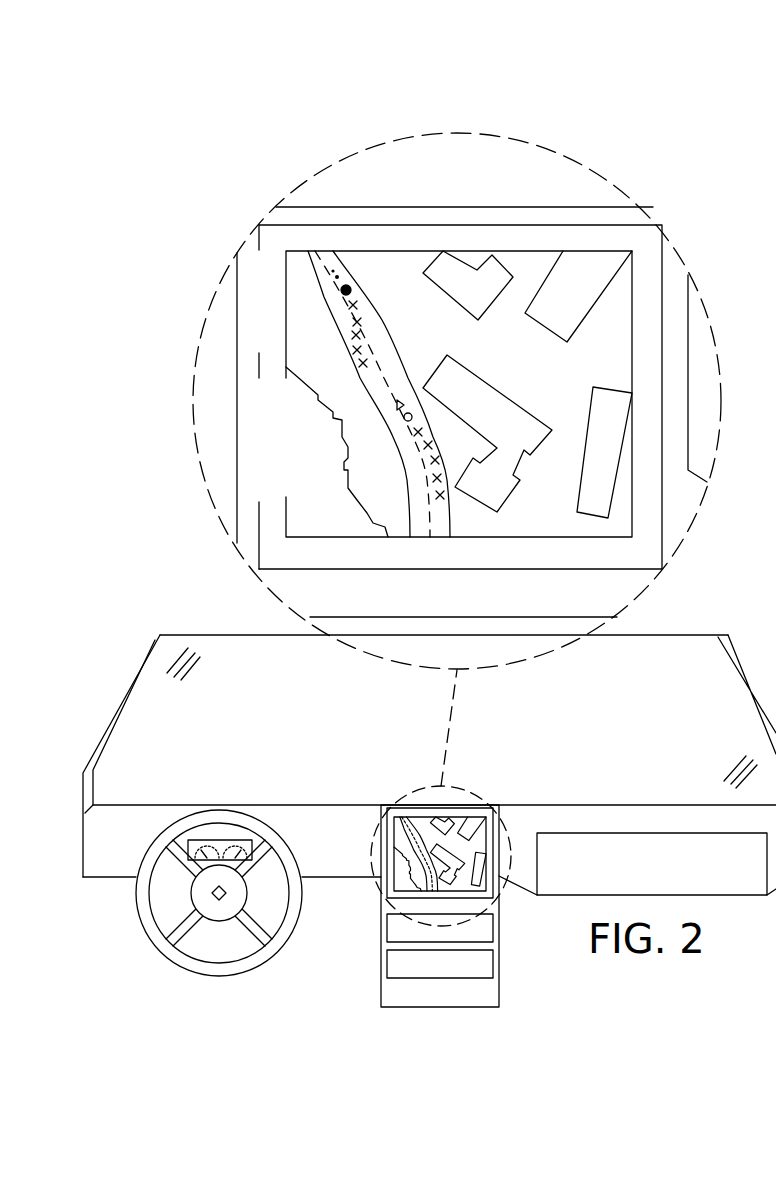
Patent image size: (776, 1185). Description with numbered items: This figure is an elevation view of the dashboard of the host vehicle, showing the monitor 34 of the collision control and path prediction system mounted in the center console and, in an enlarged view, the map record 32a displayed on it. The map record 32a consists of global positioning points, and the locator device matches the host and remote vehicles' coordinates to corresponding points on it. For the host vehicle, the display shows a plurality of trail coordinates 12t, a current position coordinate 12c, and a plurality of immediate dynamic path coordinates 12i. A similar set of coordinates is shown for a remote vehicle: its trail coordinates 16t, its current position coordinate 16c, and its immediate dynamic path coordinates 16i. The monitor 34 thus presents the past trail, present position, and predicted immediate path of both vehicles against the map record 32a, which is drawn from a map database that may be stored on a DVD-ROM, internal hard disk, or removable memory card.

The immediate dynamic path coordinates 12i is at (397, 405).
The current position coordinate 12c is at (404, 421).
The trail coordinates 12t is at (418, 440).
The immediate dynamic path coordinates 16i is at (333, 271).
The current position coordinate 16c is at (340, 290).
The trail coordinates 16t is at (351, 306).
The map record 32a is at (600, 378).
The monitor 34 is at (410, 815).